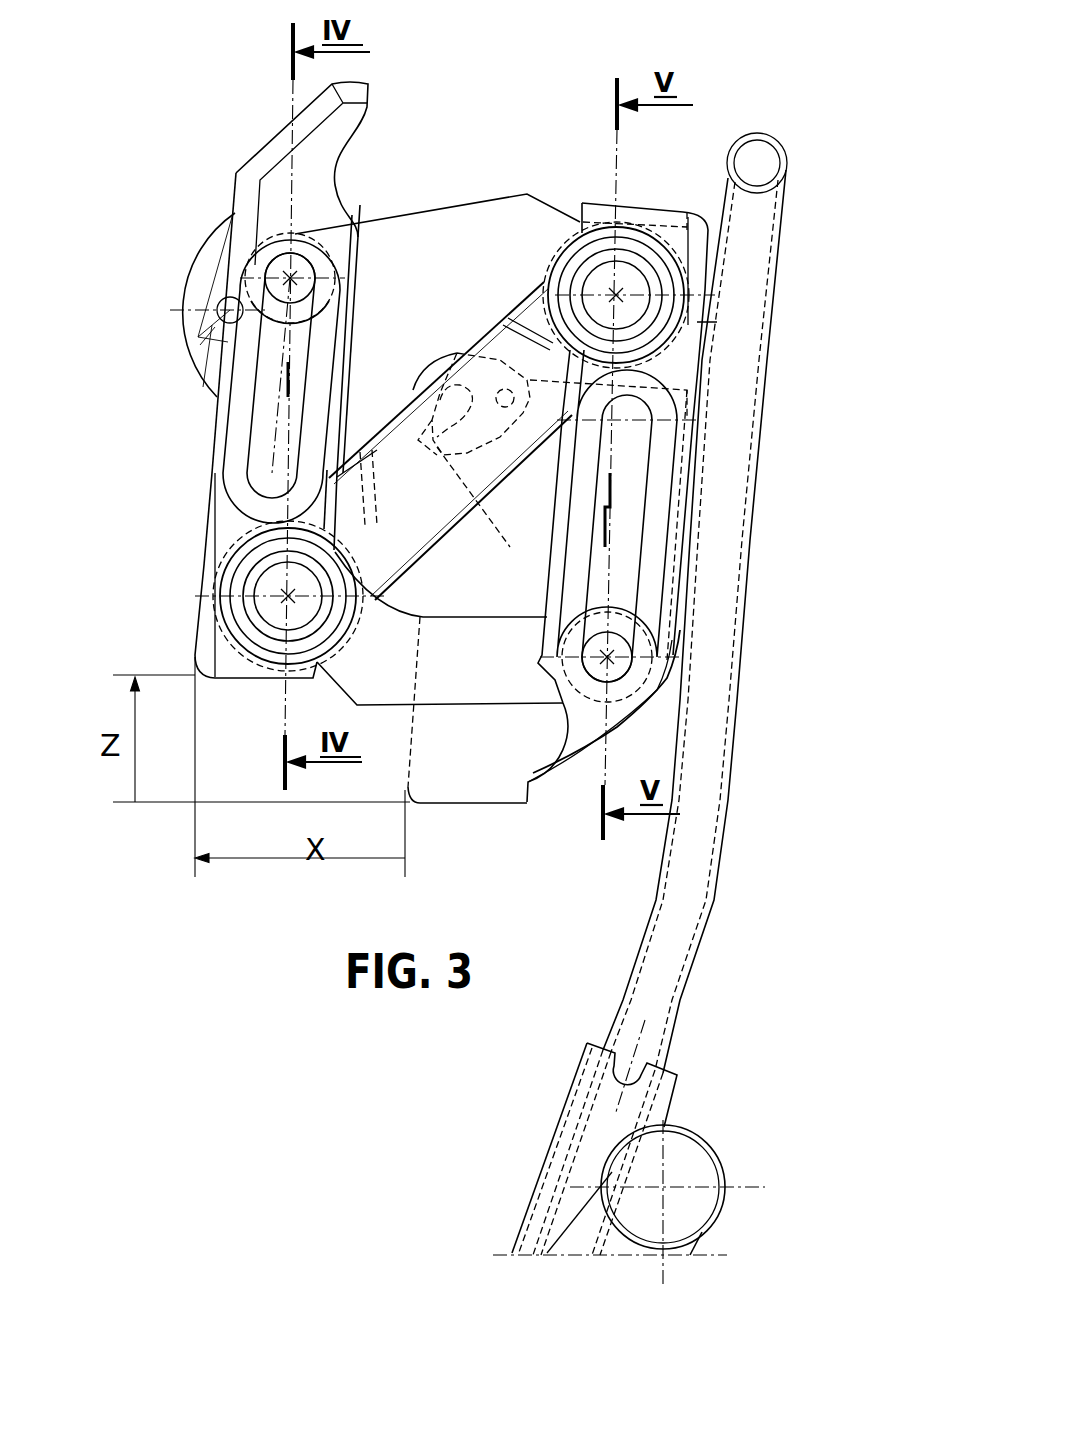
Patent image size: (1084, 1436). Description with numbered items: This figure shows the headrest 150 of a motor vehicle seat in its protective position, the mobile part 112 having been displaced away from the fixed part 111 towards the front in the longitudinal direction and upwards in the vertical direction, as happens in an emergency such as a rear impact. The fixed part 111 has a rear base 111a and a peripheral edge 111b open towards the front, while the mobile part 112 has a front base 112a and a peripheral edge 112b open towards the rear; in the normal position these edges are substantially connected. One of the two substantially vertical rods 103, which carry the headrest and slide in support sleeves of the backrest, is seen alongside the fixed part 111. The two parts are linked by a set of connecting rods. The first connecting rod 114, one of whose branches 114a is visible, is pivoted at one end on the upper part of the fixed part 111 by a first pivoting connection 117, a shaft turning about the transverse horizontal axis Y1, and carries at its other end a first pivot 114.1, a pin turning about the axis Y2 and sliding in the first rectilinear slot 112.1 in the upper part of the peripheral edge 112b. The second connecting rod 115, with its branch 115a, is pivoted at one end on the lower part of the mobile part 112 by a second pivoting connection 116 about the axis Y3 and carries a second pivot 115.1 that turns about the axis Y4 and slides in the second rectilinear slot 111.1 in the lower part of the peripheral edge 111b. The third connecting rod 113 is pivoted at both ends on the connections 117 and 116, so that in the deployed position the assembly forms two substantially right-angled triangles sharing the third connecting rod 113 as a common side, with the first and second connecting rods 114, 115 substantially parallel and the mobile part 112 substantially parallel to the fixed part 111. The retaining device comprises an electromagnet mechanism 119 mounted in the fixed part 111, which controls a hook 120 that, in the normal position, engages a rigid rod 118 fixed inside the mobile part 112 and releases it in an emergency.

The rod 103 is at (705, 878).
The headrest 150 is at (798, 68).
The fixed part 111 is at (703, 465).
The rear base 111a is at (705, 322).
The peripheral edge 111b is at (673, 358).
The second rectilinear slot 111.1 is at (648, 520).
The mobile part 112 is at (227, 409).
The front base 112a is at (205, 505).
The peripheral edge 112b is at (213, 537).
The first rectilinear slot 112.1 is at (257, 383).
The third connecting rod 113 is at (417, 530).
The first connecting rod 114 is at (422, 359).
The branch 114a is at (447, 237).
The first pivot 114.1 is at (307, 267).
The second connecting rod 115 is at (583, 707).
The branch 115a is at (485, 682).
The second pivot 115.1 is at (623, 670).
The second pivoting connection 116 is at (255, 620).
The first pivoting connection 117 is at (597, 257).
The rigid rod 118 is at (226, 305).
The electromagnet mechanism 119 is at (528, 527).
The hook 120 is at (433, 367).
The transverse horizontal axis Y1 is at (617, 295).
The axis Y2 is at (288, 278).
The axis Y3 is at (283, 603).
The axis Y4 is at (607, 657).